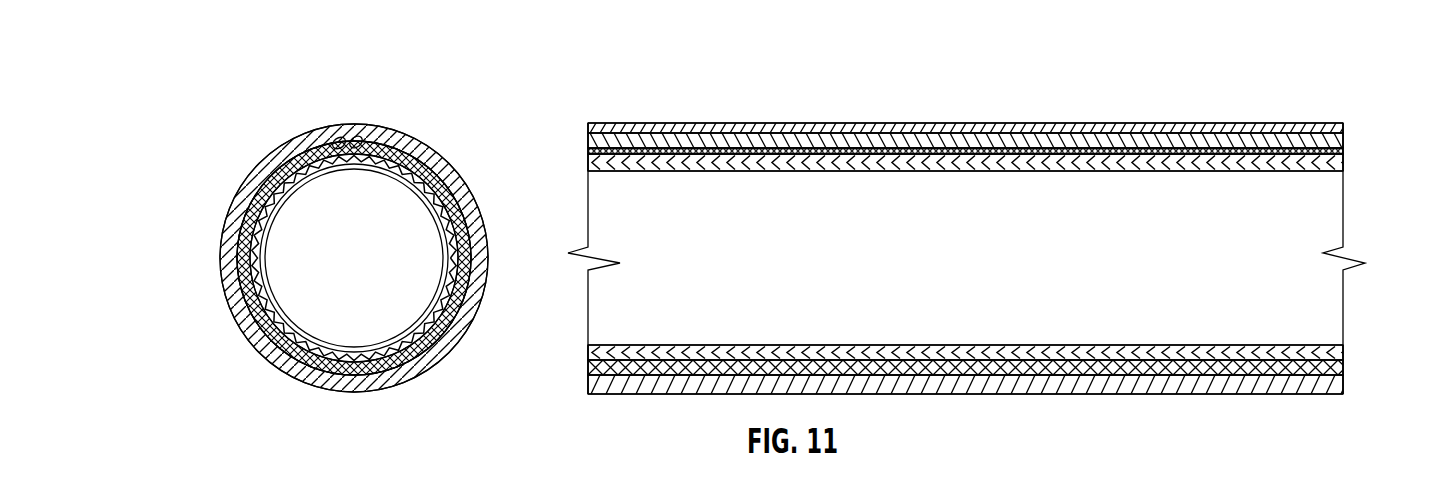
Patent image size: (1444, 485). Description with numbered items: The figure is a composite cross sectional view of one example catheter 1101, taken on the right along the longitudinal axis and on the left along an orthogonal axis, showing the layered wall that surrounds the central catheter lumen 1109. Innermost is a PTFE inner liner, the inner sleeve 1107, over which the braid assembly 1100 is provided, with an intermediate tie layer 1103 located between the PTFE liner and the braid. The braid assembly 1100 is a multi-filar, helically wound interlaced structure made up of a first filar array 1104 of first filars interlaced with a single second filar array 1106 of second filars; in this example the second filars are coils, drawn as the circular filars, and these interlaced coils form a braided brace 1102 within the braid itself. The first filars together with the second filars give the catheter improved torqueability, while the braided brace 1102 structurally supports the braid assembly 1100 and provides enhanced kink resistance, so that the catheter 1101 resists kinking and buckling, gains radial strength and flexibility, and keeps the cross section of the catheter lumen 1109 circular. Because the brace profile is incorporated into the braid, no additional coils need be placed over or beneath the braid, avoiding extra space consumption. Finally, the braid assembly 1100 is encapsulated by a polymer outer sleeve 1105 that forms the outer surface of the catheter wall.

The braid assembly 1100 is at (1340, 105).
The catheter 1101 is at (1352, 377).
The braided brace 1102 is at (1168, 137).
The intermediate tie layer 1103 is at (1165, 168).
The first filar array 1104 is at (980, 148).
The outer sleeve 1105 is at (833, 127).
The second filar array 1106 is at (1062, 135).
The inner sleeve 1107 is at (1055, 165).
The catheter lumen 1109 is at (1268, 260).